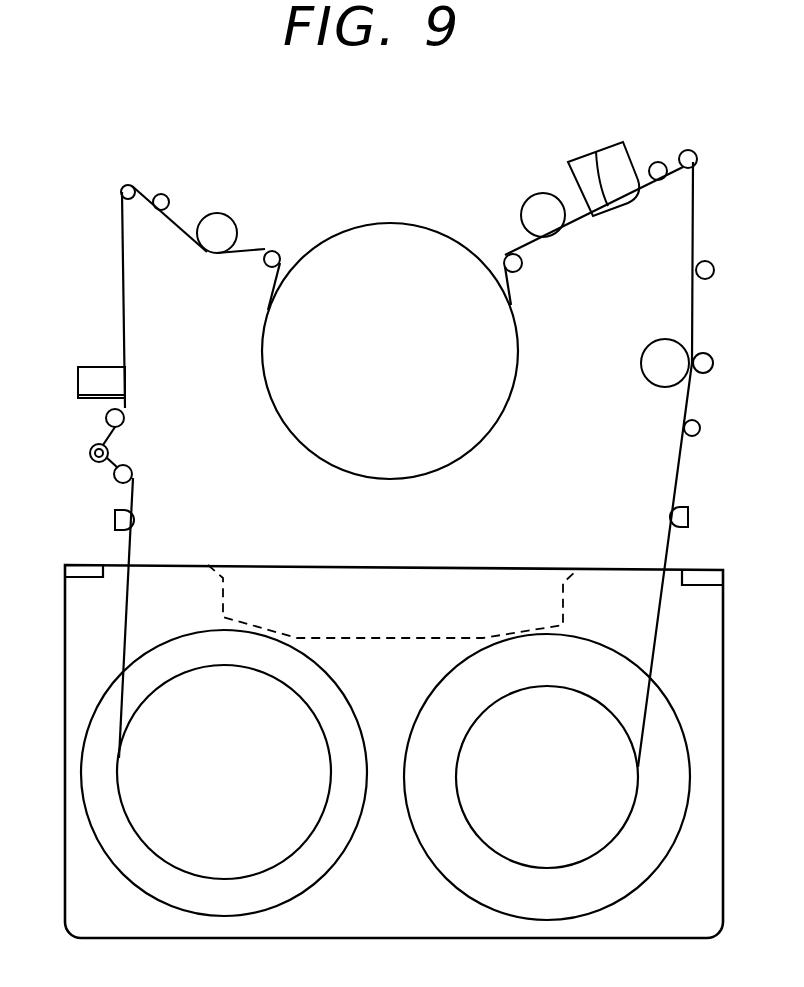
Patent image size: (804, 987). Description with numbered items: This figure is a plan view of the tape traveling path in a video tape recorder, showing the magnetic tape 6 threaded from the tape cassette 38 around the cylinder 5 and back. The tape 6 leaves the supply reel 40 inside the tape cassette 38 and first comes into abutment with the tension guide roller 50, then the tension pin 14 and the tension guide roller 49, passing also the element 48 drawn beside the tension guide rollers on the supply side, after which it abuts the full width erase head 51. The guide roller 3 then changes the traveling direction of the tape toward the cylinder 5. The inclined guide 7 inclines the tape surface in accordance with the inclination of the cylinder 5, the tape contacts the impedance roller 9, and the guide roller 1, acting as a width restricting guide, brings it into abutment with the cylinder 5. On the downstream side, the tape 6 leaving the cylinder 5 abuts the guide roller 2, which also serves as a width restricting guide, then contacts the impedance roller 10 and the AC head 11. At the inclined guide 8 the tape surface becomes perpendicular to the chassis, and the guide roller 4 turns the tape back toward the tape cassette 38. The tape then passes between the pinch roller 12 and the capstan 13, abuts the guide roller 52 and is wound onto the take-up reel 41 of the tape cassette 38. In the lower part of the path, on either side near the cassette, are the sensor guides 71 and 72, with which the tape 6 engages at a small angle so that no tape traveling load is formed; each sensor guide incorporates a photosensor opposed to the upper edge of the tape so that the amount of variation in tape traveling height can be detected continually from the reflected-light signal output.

The guide roller 1 is at (271, 266).
The guide roller 2 is at (515, 272).
The guide roller 3 is at (127, 185).
The guide roller 4 is at (694, 151).
The cylinder 5 is at (383, 225).
The magnetic tape 6 is at (124, 300).
The inclined guide 7 is at (163, 194).
The inclined guide 8 is at (659, 162).
The impedance roller 9 is at (222, 214).
The impedance roller 10 is at (530, 202).
The AC head 11 is at (596, 154).
The pinch roller 12 is at (652, 383).
The capstan 13 is at (712, 362).
The tension pin 14 is at (91, 460).
The tape cassette 38 is at (601, 567).
The supply reel 40 is at (298, 837).
The take-up reel 41 is at (605, 830).
The roller 48 is at (133, 473).
The tension guide roller 49 is at (125, 417).
The tension guide roller 50 is at (78, 387).
The full width erase head 51 is at (713, 274).
The guide roller 52 is at (700, 428).
The sensor guide 71 is at (113, 520).
The sensor guide 72 is at (690, 518).